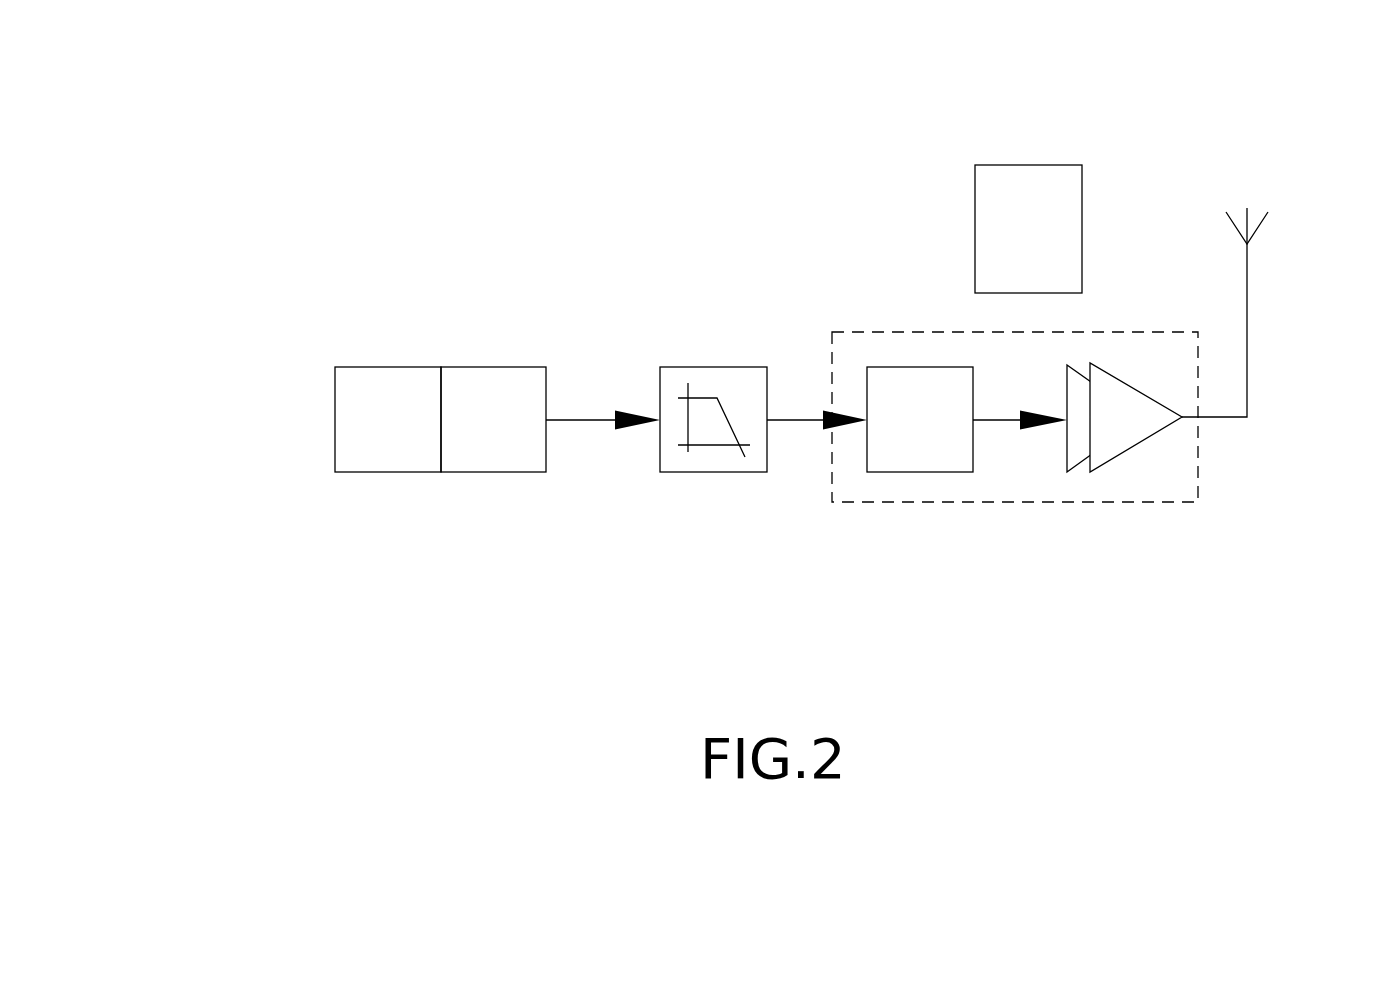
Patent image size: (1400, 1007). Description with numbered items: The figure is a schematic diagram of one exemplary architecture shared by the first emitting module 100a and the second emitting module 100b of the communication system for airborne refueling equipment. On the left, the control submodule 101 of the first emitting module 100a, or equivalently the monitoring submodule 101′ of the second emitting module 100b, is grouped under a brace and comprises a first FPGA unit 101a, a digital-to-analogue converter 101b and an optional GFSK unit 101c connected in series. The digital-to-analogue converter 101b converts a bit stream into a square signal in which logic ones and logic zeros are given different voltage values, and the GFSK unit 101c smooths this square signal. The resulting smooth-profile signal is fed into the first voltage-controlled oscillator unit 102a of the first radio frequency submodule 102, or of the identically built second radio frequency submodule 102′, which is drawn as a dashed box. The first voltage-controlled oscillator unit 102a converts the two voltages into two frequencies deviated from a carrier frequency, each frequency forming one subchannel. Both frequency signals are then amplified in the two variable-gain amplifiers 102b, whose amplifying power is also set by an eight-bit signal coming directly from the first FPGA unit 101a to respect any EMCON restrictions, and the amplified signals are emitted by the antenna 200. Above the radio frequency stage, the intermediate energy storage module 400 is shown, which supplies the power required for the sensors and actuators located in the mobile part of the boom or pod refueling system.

The first emitting module 100a is at (316, 267).
The second emitting module 100b is at (718, 391).
The control submodule 101 is at (765, 562).
The monitoring submodule 101′ is at (481, 419).
The first FPGA unit 101a is at (388, 473).
The digital-to-analogue converter 101b is at (493, 367).
The GFSK unit 101c is at (713, 473).
The first radio frequency submodule 102 is at (1198, 562).
The second radio frequency submodule 102′ is at (1072, 381).
The first voltage-controlled oscillator unit 102a is at (937, 367).
The variable-gain amplifiers 102b is at (1150, 437).
The antenna 200 is at (1250, 267).
The intermediate energy storage module 400 is at (1057, 165).